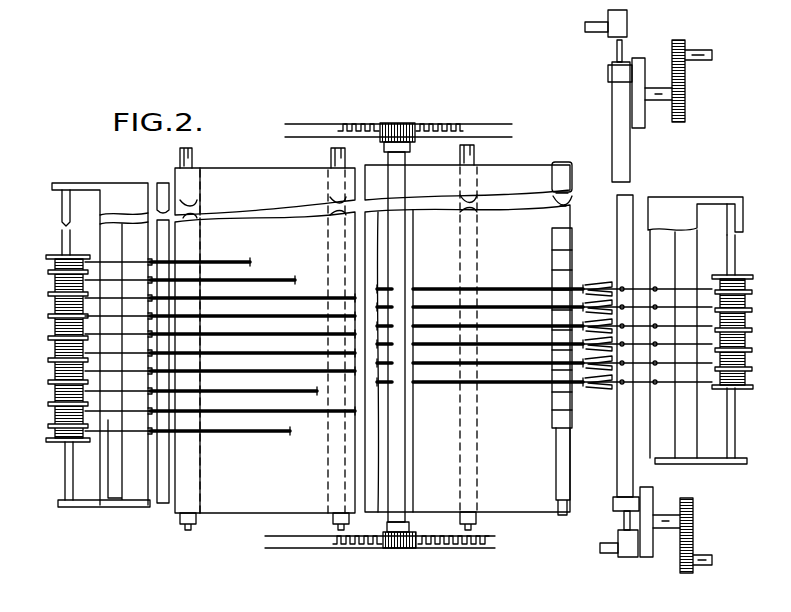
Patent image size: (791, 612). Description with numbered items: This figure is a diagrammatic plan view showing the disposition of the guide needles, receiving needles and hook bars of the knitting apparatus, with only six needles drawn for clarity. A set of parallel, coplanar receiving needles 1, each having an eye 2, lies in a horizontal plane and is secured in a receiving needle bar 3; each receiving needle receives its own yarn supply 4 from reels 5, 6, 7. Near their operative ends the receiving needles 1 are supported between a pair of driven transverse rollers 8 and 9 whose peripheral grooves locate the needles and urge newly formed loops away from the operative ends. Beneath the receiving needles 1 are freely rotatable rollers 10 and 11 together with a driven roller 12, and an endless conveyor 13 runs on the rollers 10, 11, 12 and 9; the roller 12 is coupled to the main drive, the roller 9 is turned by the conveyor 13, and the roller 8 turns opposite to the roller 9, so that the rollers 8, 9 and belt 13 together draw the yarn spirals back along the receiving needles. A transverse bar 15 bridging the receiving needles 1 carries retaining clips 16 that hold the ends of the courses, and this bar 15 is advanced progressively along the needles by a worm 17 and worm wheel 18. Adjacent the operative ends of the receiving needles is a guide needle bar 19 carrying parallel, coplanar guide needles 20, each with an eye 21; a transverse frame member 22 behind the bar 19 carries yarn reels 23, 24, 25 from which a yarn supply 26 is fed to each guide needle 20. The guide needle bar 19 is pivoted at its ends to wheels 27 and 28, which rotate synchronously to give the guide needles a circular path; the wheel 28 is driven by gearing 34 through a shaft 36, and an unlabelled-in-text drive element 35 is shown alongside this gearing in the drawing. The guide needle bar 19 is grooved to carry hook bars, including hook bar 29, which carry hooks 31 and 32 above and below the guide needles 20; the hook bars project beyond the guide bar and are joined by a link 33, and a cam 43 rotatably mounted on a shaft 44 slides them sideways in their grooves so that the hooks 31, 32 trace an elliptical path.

The receiving needles 1 is at (458, 365).
The eyes 2 is at (582, 292).
The receiving needle bar 3 is at (158, 186).
The yarn supply 4 is at (125, 297).
The reel 5 is at (85, 350).
The reel 6 is at (78, 395).
The reel 7 is at (82, 444).
The transverse roller 8 is at (560, 473).
The transverse roller 9 is at (570, 194).
The freely rotatable roller 10 is at (476, 525).
The freely rotatable roller 11 is at (333, 514).
The driven roller 12 is at (183, 518).
The endless conveyor 13 is at (236, 507).
The transverse bar 15 is at (400, 230).
The retaining clips 16 is at (413, 287).
The worm 17 is at (328, 130).
The worm wheel 18 is at (420, 114).
The guide needle bar 19 is at (618, 450).
The guide needles 20 is at (585, 393).
The eye 21 is at (588, 270).
The transverse frame member 22 is at (693, 197).
The yarn reel 23 is at (718, 333).
The yarn reel 24 is at (735, 388).
The yarn reel 25 is at (714, 437).
The yarn supply 26 is at (645, 303).
The wheel 27 is at (650, 113).
The wheel 28 is at (647, 515).
The hook bar 29 is at (618, 52).
The hooks 31 is at (583, 383).
The hooks 32 is at (483, 5).
The link 33 is at (623, 45).
The gearing 34 is at (680, 42).
The gear 35 is at (687, 100).
The shaft 36 is at (670, 527).
The cam 43 is at (608, 20).
The shaft 44 is at (585, 27).